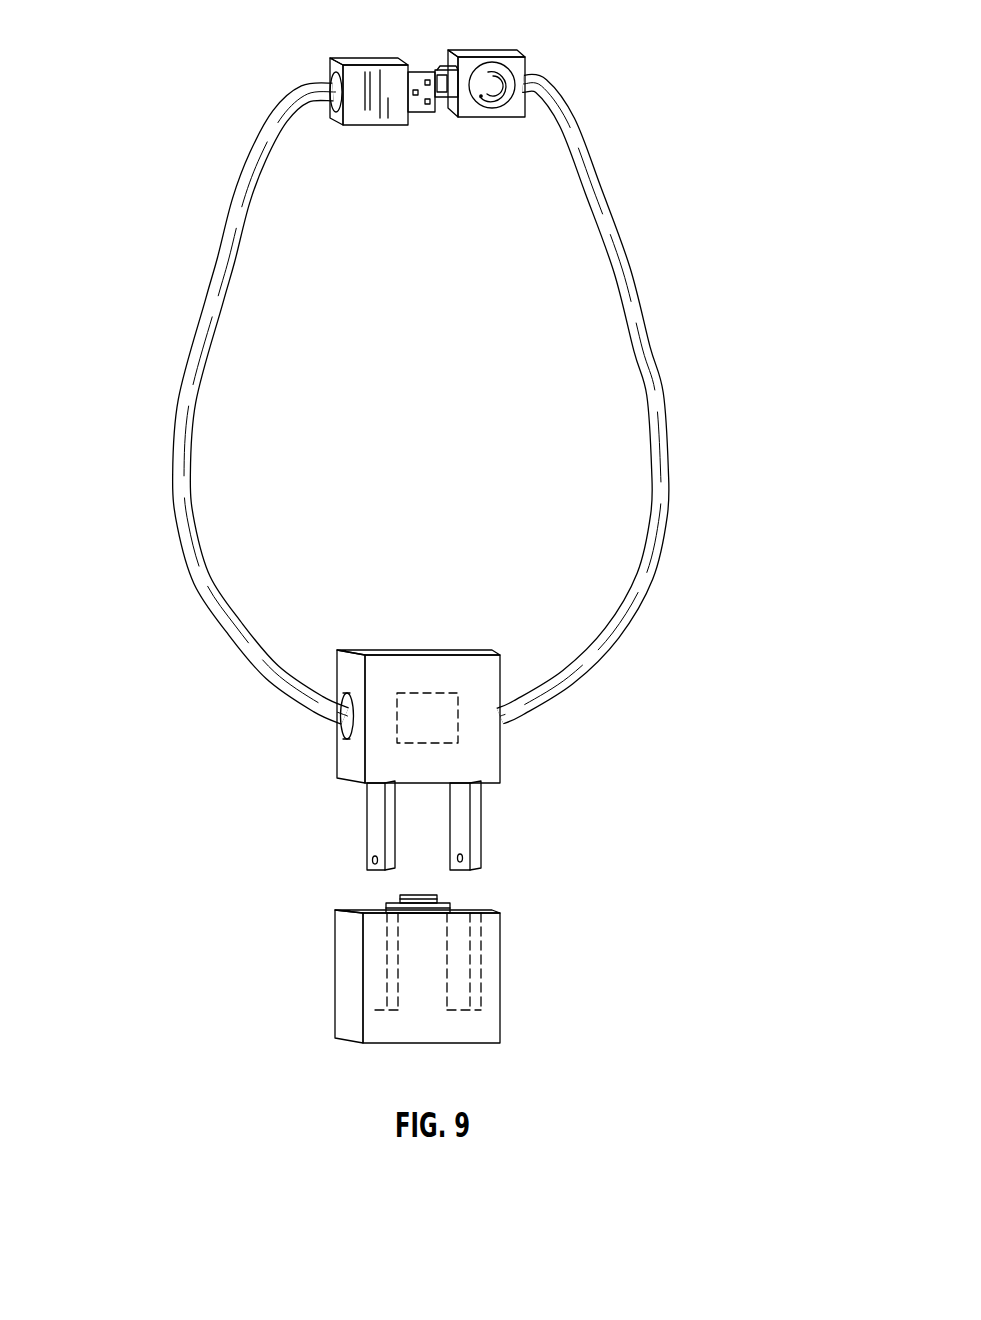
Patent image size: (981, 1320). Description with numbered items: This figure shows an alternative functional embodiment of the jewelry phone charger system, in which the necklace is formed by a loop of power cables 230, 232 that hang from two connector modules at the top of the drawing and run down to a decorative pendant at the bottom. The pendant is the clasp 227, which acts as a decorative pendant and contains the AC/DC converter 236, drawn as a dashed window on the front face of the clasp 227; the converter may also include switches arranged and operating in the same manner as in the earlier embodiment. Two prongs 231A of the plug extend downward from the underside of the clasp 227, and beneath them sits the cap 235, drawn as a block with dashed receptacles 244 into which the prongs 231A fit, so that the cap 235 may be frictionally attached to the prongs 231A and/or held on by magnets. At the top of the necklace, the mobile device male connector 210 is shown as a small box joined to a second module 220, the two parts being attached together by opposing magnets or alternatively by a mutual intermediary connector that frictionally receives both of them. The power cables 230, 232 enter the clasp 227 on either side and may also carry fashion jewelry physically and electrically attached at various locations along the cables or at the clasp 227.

The mobile device male connector 210 is at (364, 57).
The camera module 220 is at (485, 50).
The power cable 230 is at (172, 444).
The power cable 232 is at (668, 458).
The clasp 227 is at (457, 767).
The AC/DC converter 236 is at (458, 715).
The prongs 231A is at (481, 828).
The receptacle slots 244 is at (475, 932).
The cap 235 is at (500, 976).